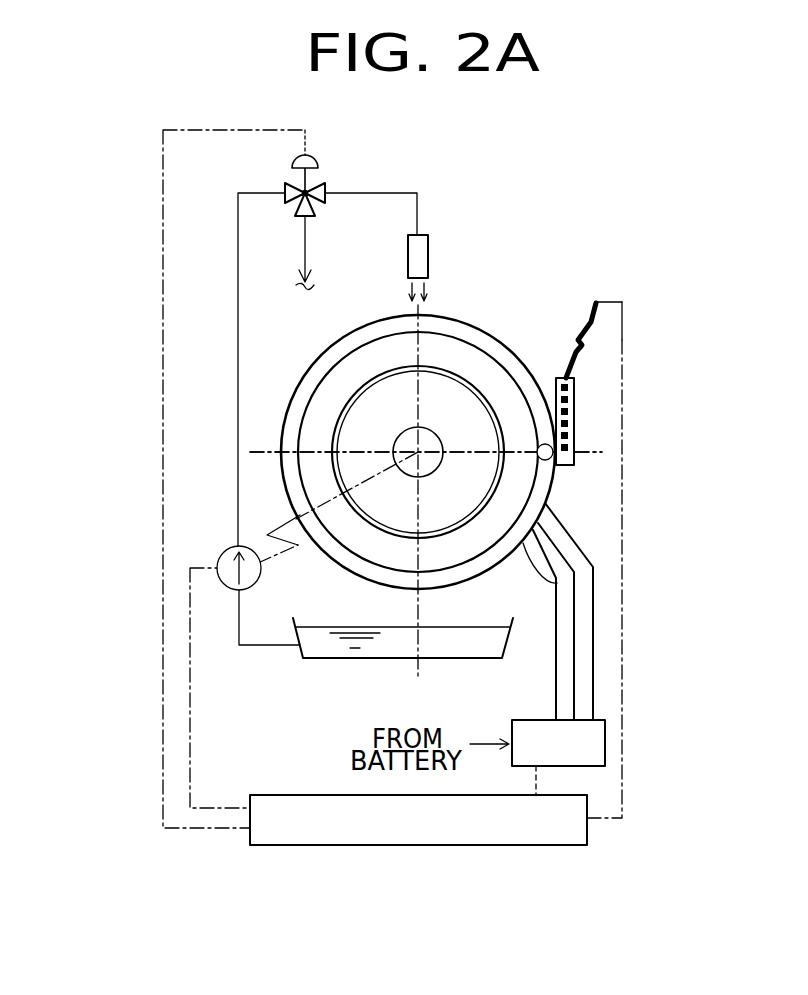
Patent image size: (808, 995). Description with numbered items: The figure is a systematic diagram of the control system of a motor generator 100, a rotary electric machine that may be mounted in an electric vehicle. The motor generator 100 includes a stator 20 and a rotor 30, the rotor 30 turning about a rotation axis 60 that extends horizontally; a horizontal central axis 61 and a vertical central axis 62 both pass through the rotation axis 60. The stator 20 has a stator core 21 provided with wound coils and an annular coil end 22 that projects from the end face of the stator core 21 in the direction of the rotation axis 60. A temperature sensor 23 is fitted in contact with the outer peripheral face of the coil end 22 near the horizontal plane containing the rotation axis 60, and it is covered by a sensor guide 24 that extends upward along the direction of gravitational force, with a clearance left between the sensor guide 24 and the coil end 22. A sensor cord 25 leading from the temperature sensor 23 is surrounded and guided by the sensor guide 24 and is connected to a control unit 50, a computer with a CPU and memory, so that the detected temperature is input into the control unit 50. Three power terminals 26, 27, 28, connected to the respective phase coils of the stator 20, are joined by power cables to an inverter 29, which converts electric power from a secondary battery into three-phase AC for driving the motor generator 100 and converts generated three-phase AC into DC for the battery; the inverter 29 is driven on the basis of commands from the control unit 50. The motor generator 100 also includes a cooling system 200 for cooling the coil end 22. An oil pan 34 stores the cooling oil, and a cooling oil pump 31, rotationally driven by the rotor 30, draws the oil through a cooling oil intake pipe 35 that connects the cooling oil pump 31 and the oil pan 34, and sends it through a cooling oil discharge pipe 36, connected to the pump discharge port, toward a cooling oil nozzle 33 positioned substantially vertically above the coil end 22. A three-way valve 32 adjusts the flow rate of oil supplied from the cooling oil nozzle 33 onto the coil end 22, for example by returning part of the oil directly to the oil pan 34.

The motor generator 100 is at (624, 188).
The stator 20 is at (468, 307).
The stator core 21 is at (497, 330).
The coil end 22 is at (540, 330).
The temperature sensor 23 is at (551, 461).
The sensor guide 24 is at (574, 408).
The sensor cord 25 is at (595, 330).
The power terminal 26 is at (557, 583).
The power terminal 27 is at (545, 520).
The power terminal 28 is at (550, 503).
The inverter 29 is at (530, 720).
The rotor 30 is at (450, 502).
The cooling oil pump 31 is at (261, 578).
The three-way valve 32 is at (331, 191).
The cooling oil nozzle 33 is at (429, 244).
The oil pan 34 is at (370, 660).
The cooling oil intake pipe 35 is at (262, 645).
The cooling oil discharge pipe 36 is at (238, 313).
The control unit 50 is at (535, 845).
The rotation axis 60 is at (418, 452).
The central axis 61 is at (263, 450).
The central axis 62 is at (418, 678).
The cooling system 200 is at (287, 704).